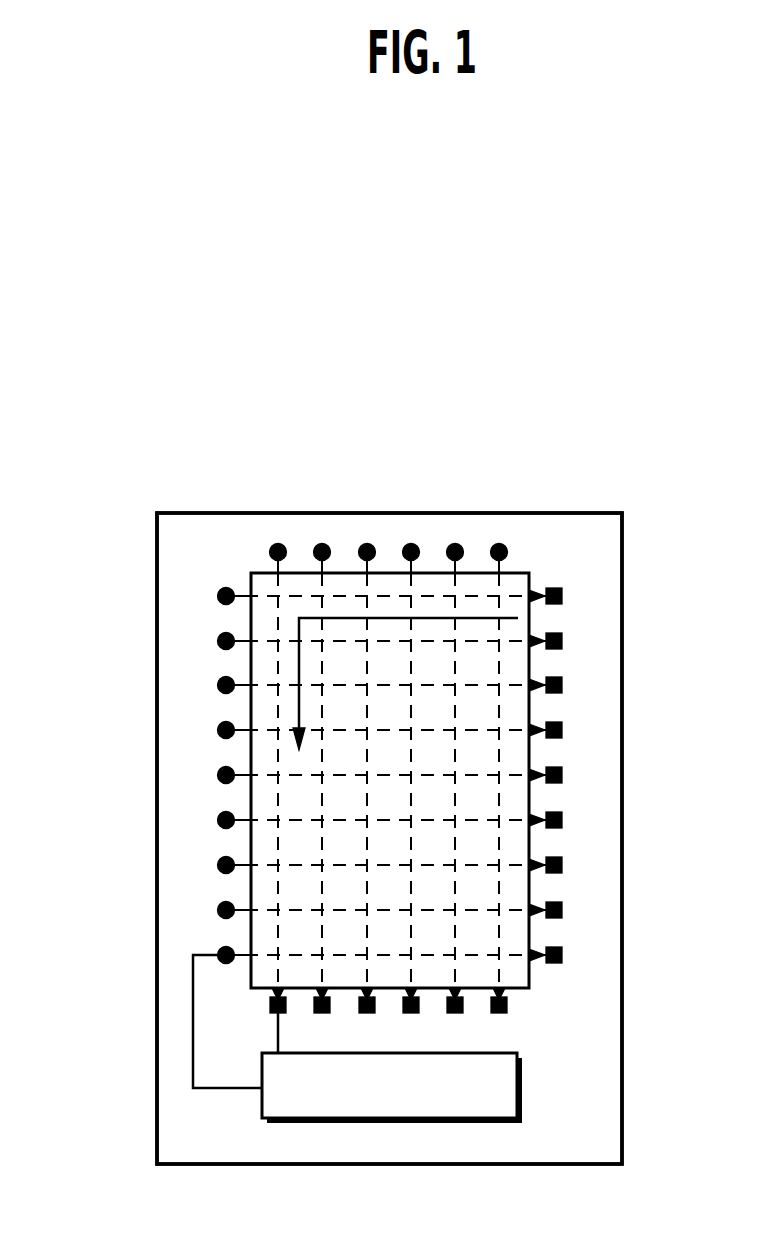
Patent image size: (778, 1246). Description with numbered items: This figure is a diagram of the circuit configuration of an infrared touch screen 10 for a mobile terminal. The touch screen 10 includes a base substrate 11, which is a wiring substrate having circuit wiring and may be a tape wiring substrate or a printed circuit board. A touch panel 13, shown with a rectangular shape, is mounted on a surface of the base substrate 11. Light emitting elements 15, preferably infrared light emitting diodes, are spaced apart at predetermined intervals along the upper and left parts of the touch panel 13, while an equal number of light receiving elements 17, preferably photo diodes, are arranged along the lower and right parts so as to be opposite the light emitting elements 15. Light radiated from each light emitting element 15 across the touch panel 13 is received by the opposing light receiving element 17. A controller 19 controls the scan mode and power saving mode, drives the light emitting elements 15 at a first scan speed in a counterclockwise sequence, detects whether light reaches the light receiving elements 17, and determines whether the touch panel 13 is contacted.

The touch screen 10 is at (545, 432).
The base substrate 11 is at (608, 1097).
The touch panel 13 is at (251, 793).
The light emitting elements 15 is at (270, 552).
The light receiving elements 17 is at (503, 1013).
The controller 19 is at (390, 1125).